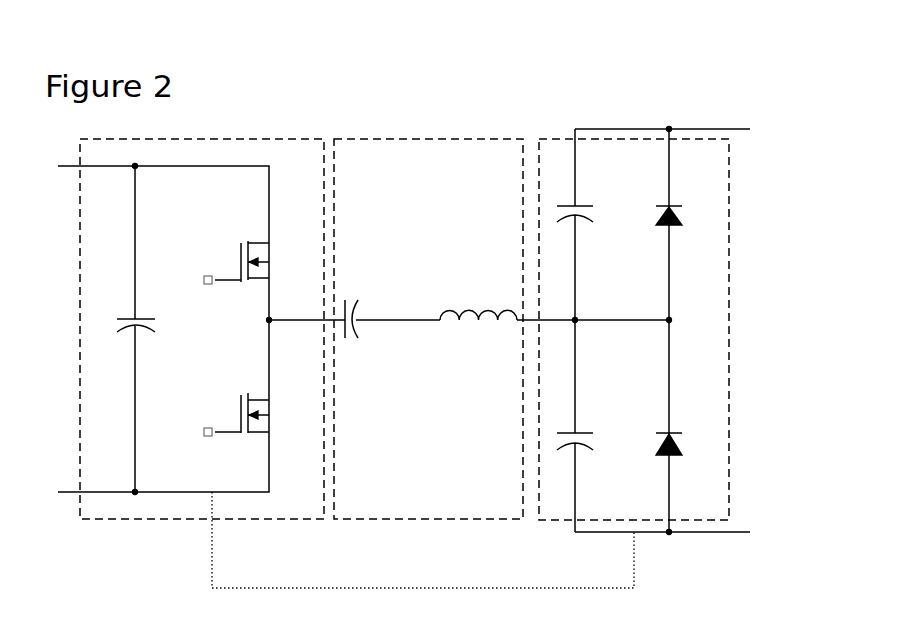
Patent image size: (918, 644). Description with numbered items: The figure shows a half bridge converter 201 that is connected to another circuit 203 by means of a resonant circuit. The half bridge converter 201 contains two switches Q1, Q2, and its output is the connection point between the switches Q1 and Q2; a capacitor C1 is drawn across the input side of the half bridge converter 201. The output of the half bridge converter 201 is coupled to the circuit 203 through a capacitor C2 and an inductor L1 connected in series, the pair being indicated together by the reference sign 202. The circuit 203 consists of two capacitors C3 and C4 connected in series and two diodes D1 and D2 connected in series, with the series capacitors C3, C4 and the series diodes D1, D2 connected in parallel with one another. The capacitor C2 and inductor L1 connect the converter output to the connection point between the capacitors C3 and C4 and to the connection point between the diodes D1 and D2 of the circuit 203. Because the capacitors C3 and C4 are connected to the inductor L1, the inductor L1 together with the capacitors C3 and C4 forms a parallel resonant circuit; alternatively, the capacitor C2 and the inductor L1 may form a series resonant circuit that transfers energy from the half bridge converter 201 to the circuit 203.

The half bridge converter 201 is at (191, 353).
The capacitor and inductor series connection 202 is at (469, 353).
The circuit 203 is at (644, 348).
The input DC bus capacitor C1 is at (157, 329).
The capacitor C2 is at (357, 305).
The capacitor C3 is at (596, 224).
The capacitor C4 is at (596, 426).
The inductor L1 is at (478, 296).
The switch Q1 is at (259, 262).
The switch Q2 is at (259, 414).
The diode D1 is at (691, 224).
The diode D2 is at (691, 426).